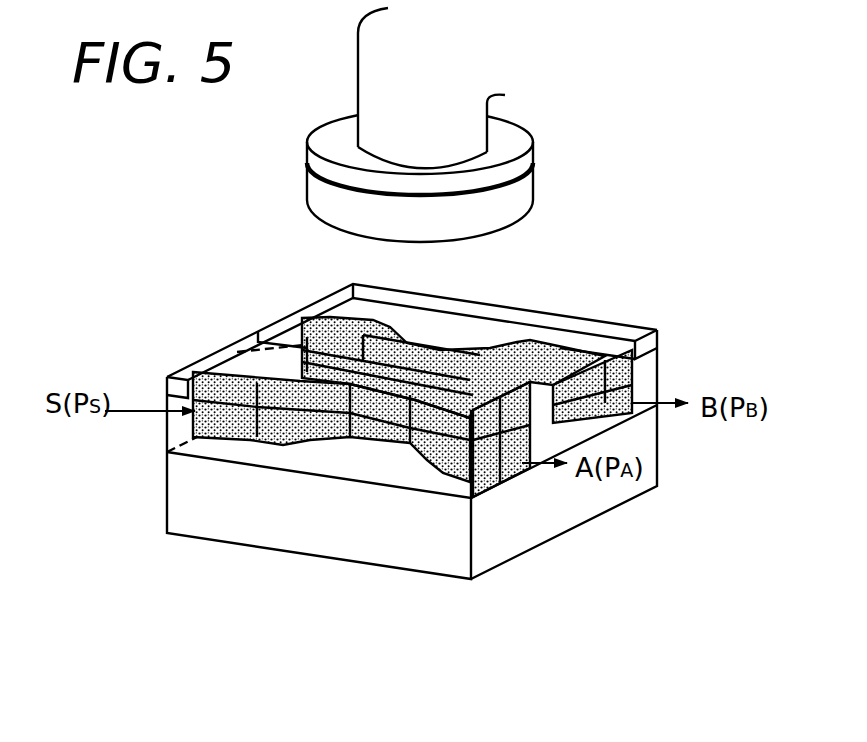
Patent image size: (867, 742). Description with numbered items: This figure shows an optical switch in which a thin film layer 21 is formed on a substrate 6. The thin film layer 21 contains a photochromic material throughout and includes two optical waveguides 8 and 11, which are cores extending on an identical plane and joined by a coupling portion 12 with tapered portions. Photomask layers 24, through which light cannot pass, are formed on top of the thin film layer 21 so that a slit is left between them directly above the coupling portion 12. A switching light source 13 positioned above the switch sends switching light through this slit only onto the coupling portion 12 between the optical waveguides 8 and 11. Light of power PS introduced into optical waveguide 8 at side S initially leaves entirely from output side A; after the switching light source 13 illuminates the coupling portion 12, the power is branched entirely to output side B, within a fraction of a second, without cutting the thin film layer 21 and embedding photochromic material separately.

The substrate 6 is at (568, 500).
The optical waveguide 8 is at (512, 465).
The optical waveguide 11 is at (618, 408).
The coupling portion 12 is at (493, 304).
The switching light source 13 is at (458, 132).
The thin film layer 21 is at (641, 377).
The photomask layers 24 is at (200, 372).